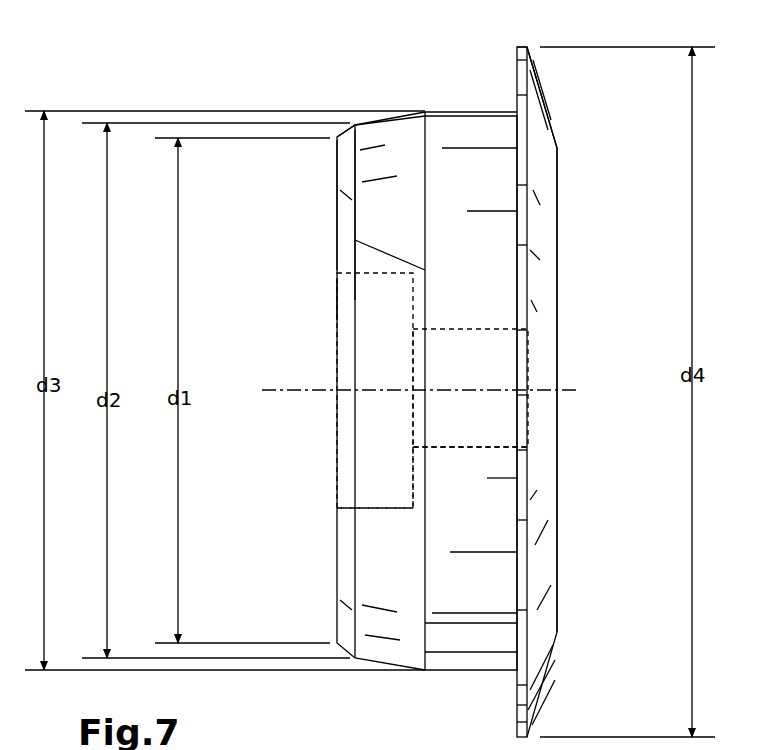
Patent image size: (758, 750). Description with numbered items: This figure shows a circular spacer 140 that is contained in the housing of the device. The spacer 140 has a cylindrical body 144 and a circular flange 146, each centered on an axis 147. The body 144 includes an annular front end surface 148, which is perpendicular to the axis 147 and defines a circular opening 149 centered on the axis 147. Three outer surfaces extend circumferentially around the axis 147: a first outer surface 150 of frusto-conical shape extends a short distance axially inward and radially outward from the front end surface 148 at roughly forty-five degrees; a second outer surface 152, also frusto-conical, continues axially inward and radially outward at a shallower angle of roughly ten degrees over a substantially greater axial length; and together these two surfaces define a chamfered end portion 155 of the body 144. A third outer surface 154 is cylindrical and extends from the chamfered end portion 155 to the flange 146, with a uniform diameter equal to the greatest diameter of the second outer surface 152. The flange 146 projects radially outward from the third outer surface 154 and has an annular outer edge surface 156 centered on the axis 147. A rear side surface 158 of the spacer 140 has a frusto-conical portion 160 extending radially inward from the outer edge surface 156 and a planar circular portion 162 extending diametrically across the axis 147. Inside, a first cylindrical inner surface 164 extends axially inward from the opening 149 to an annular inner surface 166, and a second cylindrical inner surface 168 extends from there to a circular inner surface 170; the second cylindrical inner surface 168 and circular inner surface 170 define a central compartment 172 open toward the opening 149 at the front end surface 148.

The spacer 140 is at (315, 92).
The cylindrical body 144 is at (385, 257).
The circular flange 146 is at (549, 88).
The axis 147 is at (268, 390).
The front end surface 148 is at (338, 222).
The circular opening 149 is at (337, 298).
The first outer surface 150 is at (347, 145).
The second outer surface 152 is at (407, 133).
The third outer surface 154 is at (475, 140).
The chamfered end portion 155 is at (383, 118).
The outer edge surface 156 is at (525, 47).
The rear side surface 158 is at (558, 165).
The frusto-conical portion 160 is at (542, 127).
The planar circular portion 162 is at (558, 257).
The first cylindrical inner surface 164 is at (360, 507).
The annular inner surface 166 is at (410, 482).
The second cylindrical inner surface 168 is at (490, 450).
The circular inner surface 170 is at (520, 365).
The central compartment 172 is at (415, 365).